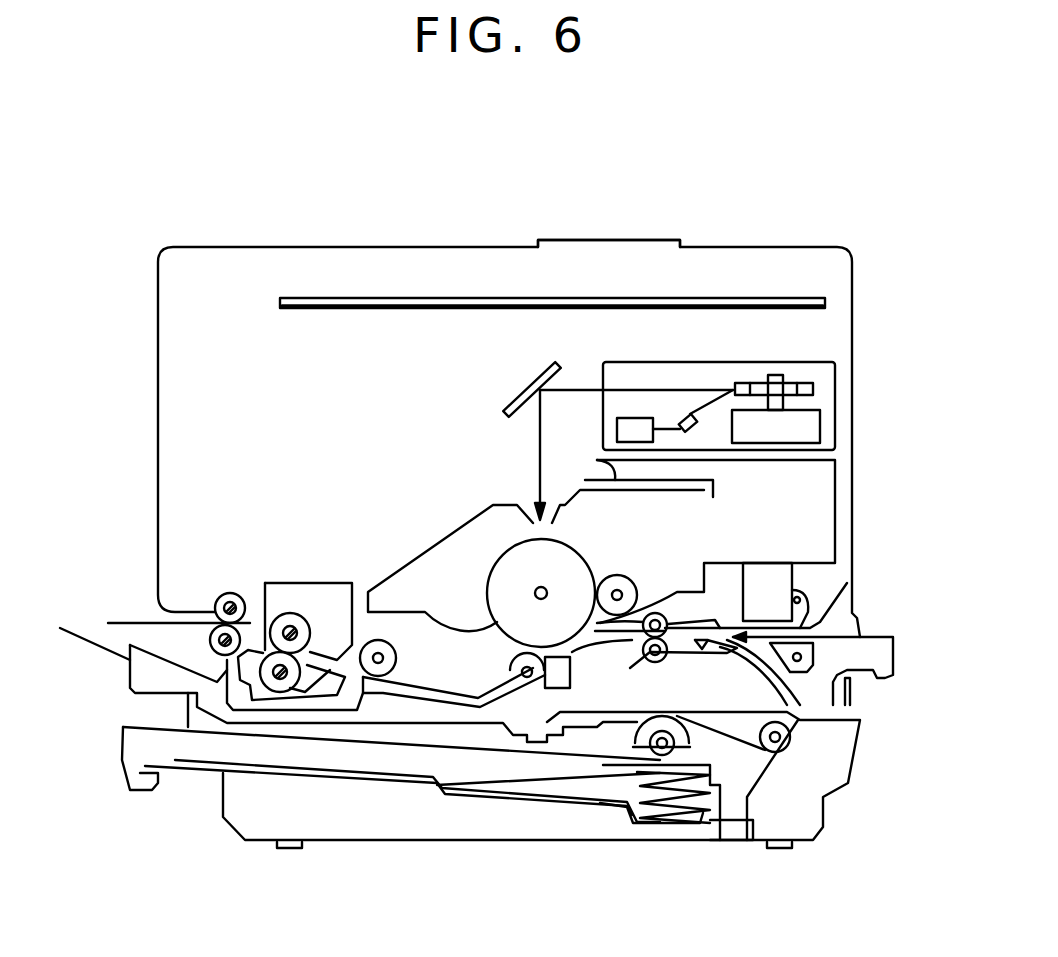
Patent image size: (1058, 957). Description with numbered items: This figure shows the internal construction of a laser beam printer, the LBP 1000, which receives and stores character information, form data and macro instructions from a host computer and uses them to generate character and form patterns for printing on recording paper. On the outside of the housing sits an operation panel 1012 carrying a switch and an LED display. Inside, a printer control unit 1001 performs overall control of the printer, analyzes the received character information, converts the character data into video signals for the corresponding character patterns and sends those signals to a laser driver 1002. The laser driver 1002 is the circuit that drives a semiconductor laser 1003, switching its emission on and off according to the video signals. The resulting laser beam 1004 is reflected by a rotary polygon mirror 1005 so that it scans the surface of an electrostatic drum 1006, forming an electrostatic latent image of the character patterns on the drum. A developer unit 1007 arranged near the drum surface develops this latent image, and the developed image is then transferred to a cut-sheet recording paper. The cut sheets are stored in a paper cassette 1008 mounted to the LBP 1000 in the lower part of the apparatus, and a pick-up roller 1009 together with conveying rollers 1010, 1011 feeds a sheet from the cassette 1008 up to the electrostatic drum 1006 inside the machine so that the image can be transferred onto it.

The laser beam printer 1000 is at (275, 197).
The printer control unit 1001 is at (803, 300).
The laser driver 1002 is at (617, 429).
The semiconductor laser 1003 is at (700, 432).
The laser beam 1004 is at (697, 393).
The rotary polygon mirror 1005 is at (813, 390).
The electrostatic drum 1006 is at (515, 562).
The developer unit 1007 is at (433, 583).
The paper cassette 1008 is at (122, 764).
The pick-up roller 1009 is at (648, 747).
The conveying roller 1010 is at (781, 752).
The conveying roller 1011 is at (656, 662).
The operation panel 1012 is at (604, 242).